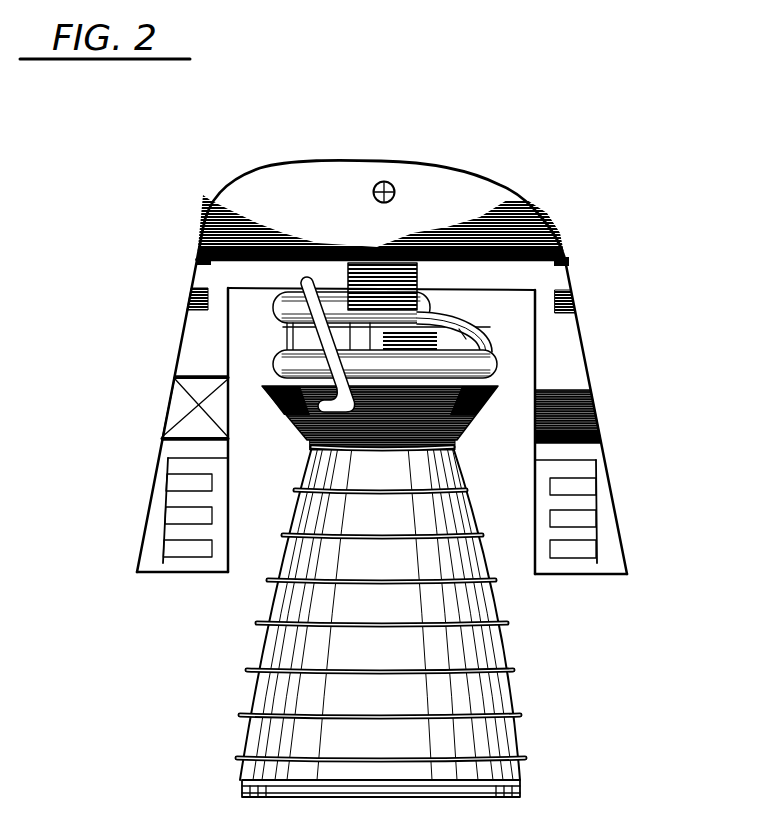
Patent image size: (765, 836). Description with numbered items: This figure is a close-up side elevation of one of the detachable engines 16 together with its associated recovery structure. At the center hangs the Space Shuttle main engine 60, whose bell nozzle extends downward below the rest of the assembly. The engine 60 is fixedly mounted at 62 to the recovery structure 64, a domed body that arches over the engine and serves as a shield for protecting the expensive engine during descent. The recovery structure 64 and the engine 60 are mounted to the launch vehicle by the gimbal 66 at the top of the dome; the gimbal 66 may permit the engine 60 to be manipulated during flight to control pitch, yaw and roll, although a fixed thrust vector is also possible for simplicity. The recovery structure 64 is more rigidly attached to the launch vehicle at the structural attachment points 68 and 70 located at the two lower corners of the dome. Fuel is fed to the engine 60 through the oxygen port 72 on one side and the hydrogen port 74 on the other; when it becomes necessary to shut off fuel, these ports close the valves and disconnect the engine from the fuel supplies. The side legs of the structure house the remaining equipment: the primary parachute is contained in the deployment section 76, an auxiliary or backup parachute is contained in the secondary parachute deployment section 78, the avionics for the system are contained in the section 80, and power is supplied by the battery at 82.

The detachable engine 16 is at (626, 239).
The Space Shuttle main engine 60 is at (519, 697).
The mounting location 62 is at (423, 266).
The recovery structure 64 is at (325, 163).
The gimbal 66 is at (393, 183).
The structural attachment point 68 is at (196, 259).
The structural attachment point 70 is at (571, 261).
The oxygen port 72 is at (191, 296).
The hydrogen port 74 is at (577, 301).
The deployment section 76 is at (625, 558).
The secondary parachute deployment section 78 is at (164, 566).
The avionics section 80 is at (188, 405).
The battery 82 is at (593, 408).